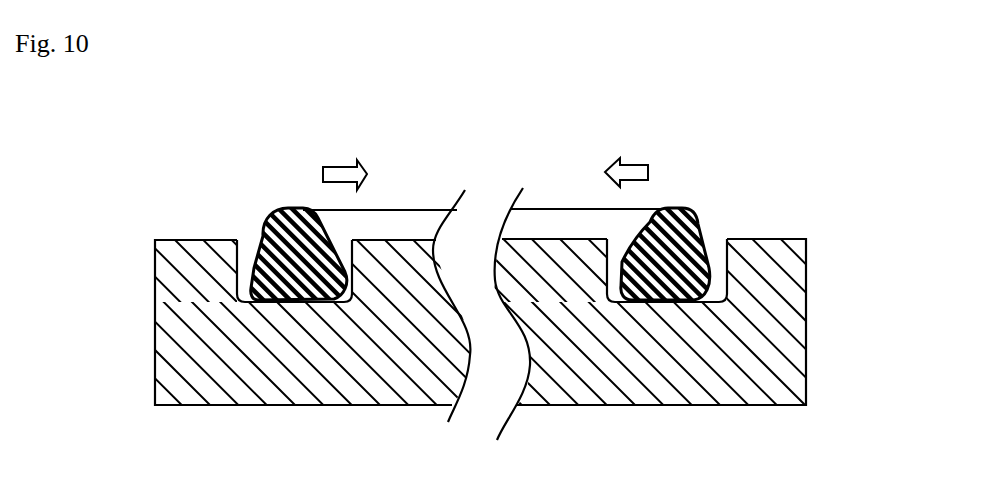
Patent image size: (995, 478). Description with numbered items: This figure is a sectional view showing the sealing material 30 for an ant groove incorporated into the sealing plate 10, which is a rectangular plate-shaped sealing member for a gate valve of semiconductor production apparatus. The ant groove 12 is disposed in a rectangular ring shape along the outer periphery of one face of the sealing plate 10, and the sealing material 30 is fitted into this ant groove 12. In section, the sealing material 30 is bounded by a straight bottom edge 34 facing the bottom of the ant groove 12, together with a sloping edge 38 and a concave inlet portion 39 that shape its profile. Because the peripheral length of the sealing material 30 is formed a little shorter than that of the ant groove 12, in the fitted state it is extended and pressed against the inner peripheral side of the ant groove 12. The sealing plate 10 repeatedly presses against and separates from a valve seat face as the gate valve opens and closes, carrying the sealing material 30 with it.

The sealing plate 10 is at (204, 238).
The ant groove 12 is at (727, 293).
The sealing material for ant groove 30 is at (688, 245).
The straight bottom edge 34 is at (678, 303).
The sloping edge 38 is at (333, 230).
The concave inlet portion 39 is at (256, 247).